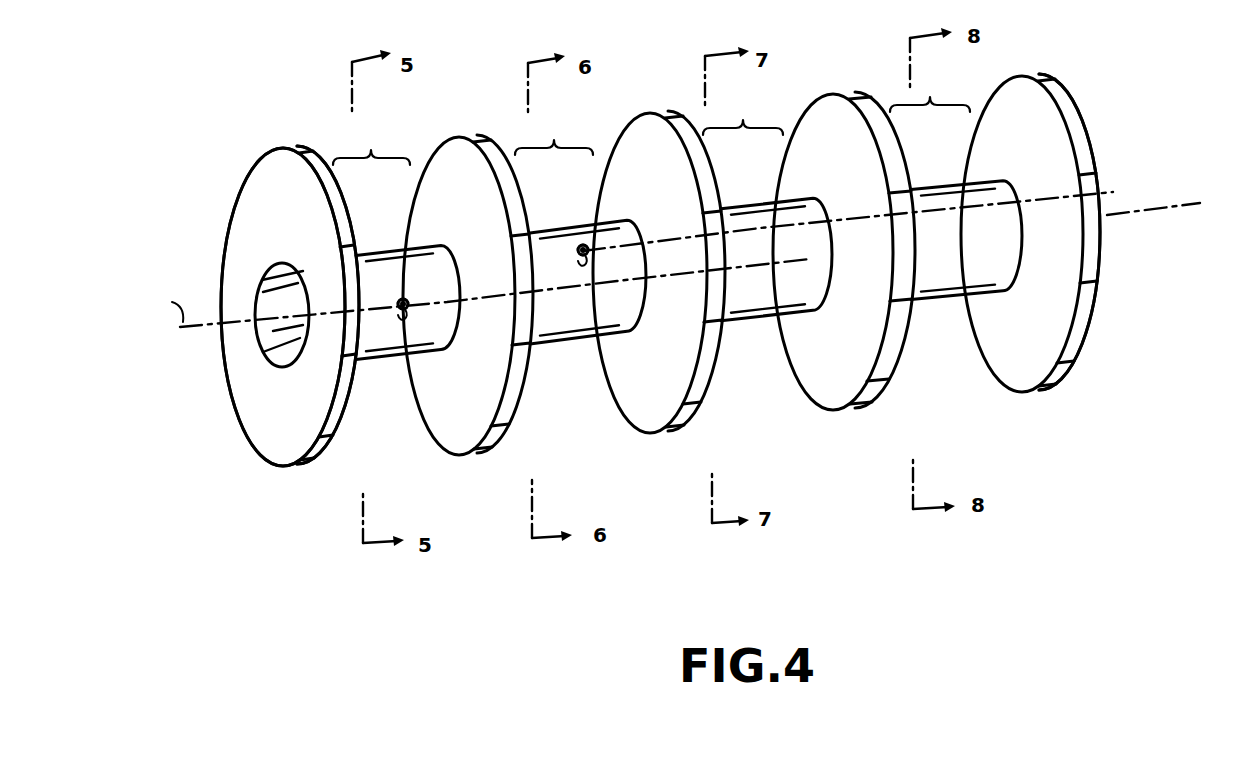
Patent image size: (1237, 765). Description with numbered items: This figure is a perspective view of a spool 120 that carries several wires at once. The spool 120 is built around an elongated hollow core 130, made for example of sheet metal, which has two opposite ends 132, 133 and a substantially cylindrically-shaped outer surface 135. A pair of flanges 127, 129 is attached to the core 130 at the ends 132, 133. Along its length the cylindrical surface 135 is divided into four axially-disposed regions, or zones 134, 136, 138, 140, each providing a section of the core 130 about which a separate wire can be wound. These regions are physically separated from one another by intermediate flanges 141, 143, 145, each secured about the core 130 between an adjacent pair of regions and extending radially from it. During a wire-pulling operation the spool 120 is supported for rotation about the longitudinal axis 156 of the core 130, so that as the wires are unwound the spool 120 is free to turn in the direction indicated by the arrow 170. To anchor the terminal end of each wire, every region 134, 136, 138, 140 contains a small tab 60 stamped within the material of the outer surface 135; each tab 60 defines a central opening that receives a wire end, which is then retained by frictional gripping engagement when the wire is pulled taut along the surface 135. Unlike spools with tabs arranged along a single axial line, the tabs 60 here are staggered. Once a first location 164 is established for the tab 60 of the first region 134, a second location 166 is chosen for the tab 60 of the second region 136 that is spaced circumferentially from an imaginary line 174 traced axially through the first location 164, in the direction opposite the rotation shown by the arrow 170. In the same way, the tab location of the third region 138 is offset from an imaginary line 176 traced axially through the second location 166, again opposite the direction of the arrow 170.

The spool 120 is at (234, 134).
The elongated hollow core 130 is at (395, 272).
The end of core 132 is at (278, 416).
The flange 127 is at (310, 470).
The imaginary line 174 is at (268, 350).
The arrow indicating direction of rotation 170 is at (178, 346).
The longitudinal axis 156 is at (157, 299).
The first location 164 is at (406, 312).
The second location 166 is at (583, 258).
The tab 60 is at (405, 302).
The first axial region 134 is at (371, 142).
The second axial region 136 is at (554, 127).
The third axial region 138 is at (743, 110).
The fourth axial region 140 is at (930, 89).
The flange 141 is at (476, 134).
The flange 143 is at (648, 114).
The flange 145 is at (837, 94).
The end of core 133 is at (1096, 170).
The flange 129 is at (1067, 373).
The cylindrical outer surface 135 is at (627, 331).
The imaginary line 176 is at (1113, 192).